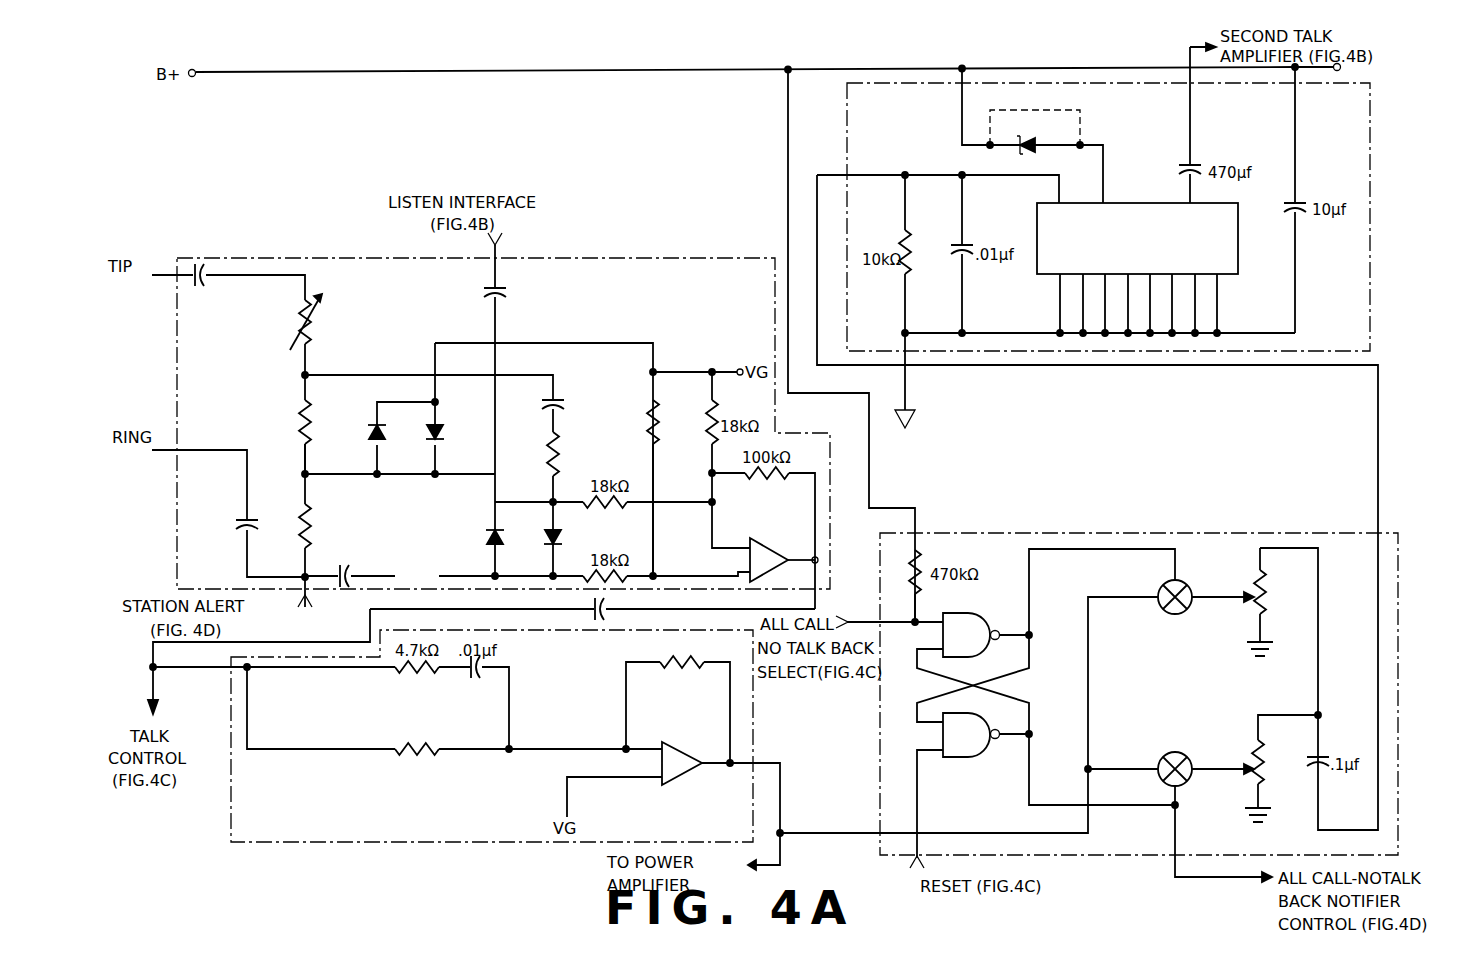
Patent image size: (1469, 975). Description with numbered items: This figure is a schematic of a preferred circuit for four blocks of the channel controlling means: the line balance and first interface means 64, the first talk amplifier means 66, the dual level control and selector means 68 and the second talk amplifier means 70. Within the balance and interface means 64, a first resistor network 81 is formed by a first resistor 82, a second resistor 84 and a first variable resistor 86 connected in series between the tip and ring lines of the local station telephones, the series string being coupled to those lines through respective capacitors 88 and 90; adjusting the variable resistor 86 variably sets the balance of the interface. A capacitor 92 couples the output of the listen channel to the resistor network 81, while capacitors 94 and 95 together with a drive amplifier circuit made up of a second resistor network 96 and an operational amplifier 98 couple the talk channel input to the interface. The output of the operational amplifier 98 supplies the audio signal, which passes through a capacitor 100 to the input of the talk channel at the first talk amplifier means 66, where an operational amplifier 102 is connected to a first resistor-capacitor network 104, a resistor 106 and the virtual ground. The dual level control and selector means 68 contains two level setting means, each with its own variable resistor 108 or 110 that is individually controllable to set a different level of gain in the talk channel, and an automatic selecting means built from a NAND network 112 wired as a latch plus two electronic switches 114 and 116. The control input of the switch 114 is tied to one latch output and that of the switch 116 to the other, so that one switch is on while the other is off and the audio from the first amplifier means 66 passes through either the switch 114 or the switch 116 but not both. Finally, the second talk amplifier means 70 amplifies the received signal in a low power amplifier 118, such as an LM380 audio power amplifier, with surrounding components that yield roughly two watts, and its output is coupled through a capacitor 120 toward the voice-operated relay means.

The line balance and first interface means 64 is at (670, 256).
The first talk amplifier means 66 is at (231, 820).
The dual level control and selector means 68 is at (1240, 532).
The second talk amplifier means 70 is at (1371, 234).
The first resistor network 81 is at (270, 402).
The first resistor 82 is at (298, 524).
The second resistor 84 is at (297, 440).
The first variable resistor 86 is at (295, 323).
The capacitor 88 is at (203, 289).
The capacitor 90 is at (243, 517).
The capacitor 92 is at (500, 300).
The capacitor 94 is at (545, 405).
The capacitor 95 is at (352, 572).
The second resistor network 96 is at (674, 364).
The operational amplifier 98 is at (770, 548).
The capacitor 100 is at (616, 613).
The operational amplifier 102 is at (690, 776).
The first resistor-capacitor network 104 is at (396, 760).
The resistor 106 is at (676, 674).
The variable resistor 108 is at (1250, 605).
The variable resistor 110 is at (1250, 758).
The NAND network 112 is at (960, 761).
The electronic switch 114 is at (1160, 612).
The electronic switch 116 is at (1164, 757).
The low power amplifier 118 is at (1137, 238).
The capacitor 120 is at (1185, 162).